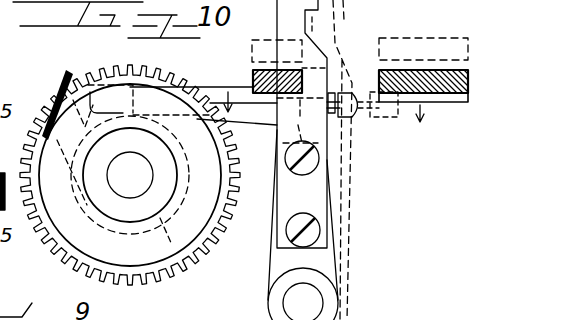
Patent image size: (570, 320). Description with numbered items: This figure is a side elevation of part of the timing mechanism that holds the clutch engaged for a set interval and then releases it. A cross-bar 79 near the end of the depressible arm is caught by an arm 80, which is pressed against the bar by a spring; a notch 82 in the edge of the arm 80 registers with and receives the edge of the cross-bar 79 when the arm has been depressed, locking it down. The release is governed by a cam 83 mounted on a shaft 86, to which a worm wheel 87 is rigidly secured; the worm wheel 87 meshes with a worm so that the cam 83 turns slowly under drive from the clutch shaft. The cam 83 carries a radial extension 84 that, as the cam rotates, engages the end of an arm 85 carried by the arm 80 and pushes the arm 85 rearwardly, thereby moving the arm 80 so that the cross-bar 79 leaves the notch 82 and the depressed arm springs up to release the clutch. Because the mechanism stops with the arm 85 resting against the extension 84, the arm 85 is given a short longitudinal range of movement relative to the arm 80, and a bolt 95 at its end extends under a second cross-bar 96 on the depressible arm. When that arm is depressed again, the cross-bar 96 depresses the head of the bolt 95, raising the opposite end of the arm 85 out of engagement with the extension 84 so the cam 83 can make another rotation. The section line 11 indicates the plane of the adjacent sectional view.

The section line 11- 11 is at (320, 109).
The cross-bar 79 is at (253, 78).
The arm 80 is at (293, 17).
The notch 82 is at (292, 70).
The cam 83 is at (191, 276).
The radial extension 84 is at (69, 72).
The arm 85 is at (186, 86).
The shaft 86 is at (130, 175).
The worm wheel 87 is at (80, 267).
The bolt 95 is at (354, 118).
The second cross-bar 96 is at (469, 78).